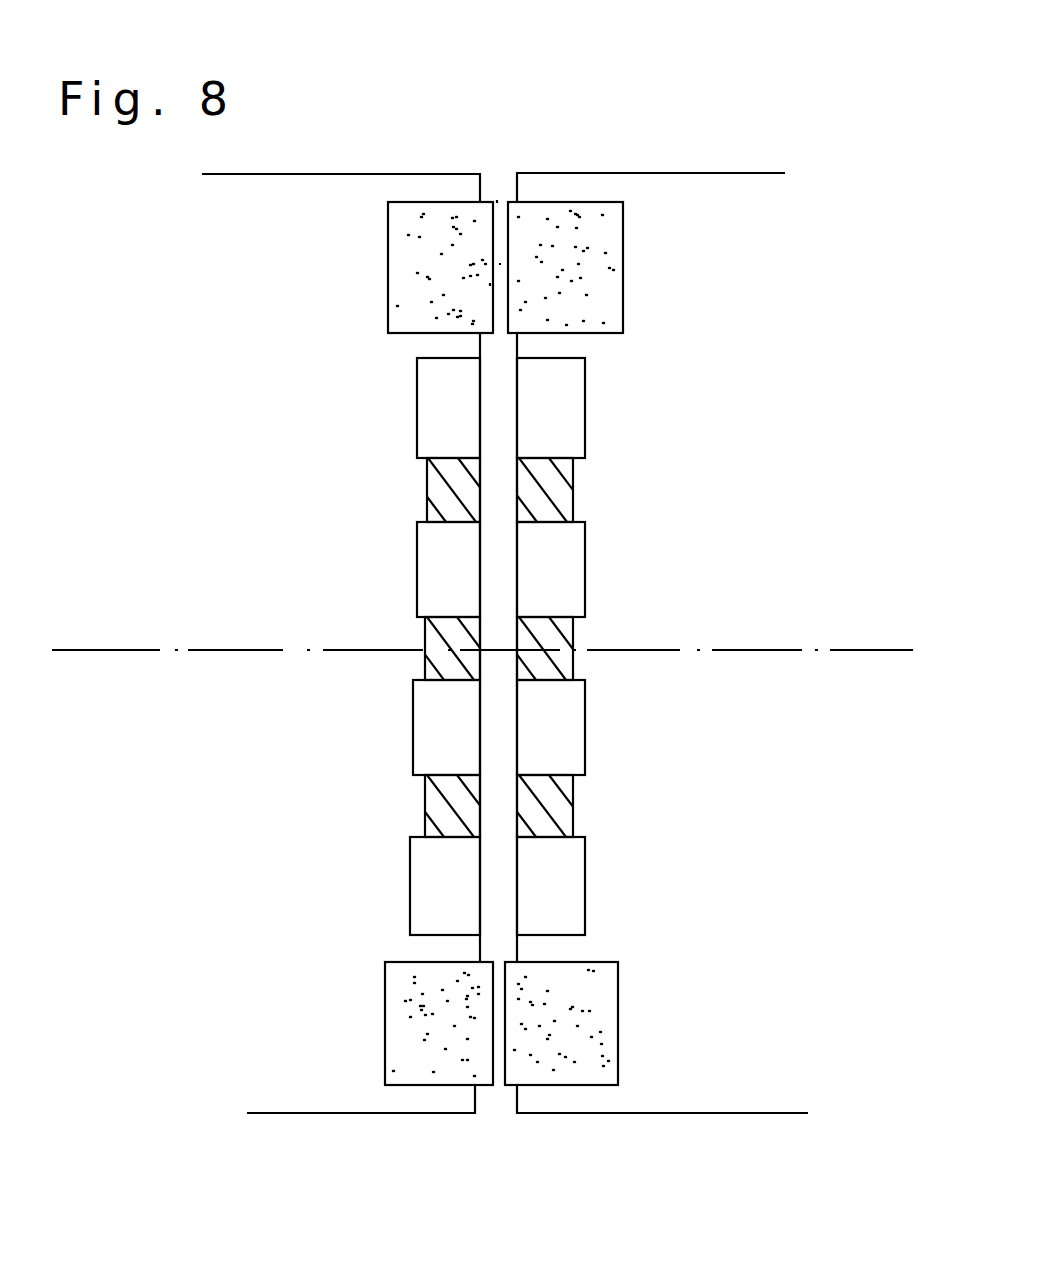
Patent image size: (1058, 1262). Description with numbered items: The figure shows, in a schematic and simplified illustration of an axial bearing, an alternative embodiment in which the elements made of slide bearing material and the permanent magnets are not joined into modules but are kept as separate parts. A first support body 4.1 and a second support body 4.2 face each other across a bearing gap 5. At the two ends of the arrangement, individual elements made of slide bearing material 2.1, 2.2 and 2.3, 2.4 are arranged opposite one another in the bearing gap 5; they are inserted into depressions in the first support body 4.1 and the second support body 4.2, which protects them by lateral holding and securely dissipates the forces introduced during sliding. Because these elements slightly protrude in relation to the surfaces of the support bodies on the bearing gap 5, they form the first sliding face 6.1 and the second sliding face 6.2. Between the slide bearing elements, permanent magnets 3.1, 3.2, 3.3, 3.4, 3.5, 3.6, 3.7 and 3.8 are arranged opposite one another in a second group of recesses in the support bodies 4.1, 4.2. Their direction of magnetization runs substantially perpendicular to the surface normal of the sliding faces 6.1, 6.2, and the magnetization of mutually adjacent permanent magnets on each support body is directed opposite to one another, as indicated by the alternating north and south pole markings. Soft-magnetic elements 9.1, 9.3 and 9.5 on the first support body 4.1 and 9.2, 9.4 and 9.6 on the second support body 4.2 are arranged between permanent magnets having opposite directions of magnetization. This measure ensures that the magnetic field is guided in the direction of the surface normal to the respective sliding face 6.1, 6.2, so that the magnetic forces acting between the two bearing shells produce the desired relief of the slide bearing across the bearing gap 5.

The element made of slide bearing material 2.1 is at (400, 318).
The element made of slide bearing material 2.2 is at (600, 305).
The element made of slide bearing material 2.3 is at (400, 1038).
The element made of slide bearing material 2.4 is at (600, 1040).
The permanent magnet 3.1 is at (430, 412).
The permanent magnet 3.2 is at (585, 408).
The permanent magnet 3.3 is at (430, 562).
The permanent magnet 3.4 is at (585, 560).
The permanent magnet 3.5 is at (427, 722).
The permanent magnet 3.6 is at (585, 723).
The permanent magnet 3.7 is at (413, 868).
The permanent magnet 3.8 is at (585, 873).
The first support body 4.1 is at (343, 237).
The second support body 4.2 is at (758, 233).
The bearing gap 5 is at (498, 203).
The first sliding face 6.1 is at (490, 285).
The second sliding face 6.2 is at (500, 266).
The soft-magnetic element 9.1 is at (427, 490).
The soft-magnetic element 9.2 is at (575, 488).
The soft-magnetic element 9.3 is at (427, 663).
The soft-magnetic element 9.4 is at (575, 627).
The soft-magnetic element 9.5 is at (427, 806).
The soft-magnetic element 9.6 is at (575, 793).